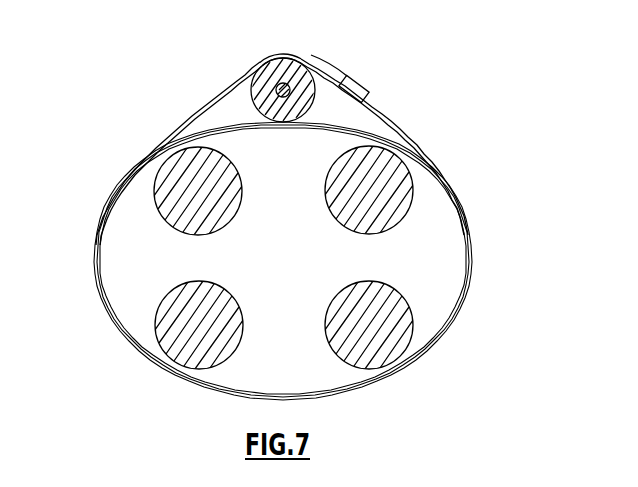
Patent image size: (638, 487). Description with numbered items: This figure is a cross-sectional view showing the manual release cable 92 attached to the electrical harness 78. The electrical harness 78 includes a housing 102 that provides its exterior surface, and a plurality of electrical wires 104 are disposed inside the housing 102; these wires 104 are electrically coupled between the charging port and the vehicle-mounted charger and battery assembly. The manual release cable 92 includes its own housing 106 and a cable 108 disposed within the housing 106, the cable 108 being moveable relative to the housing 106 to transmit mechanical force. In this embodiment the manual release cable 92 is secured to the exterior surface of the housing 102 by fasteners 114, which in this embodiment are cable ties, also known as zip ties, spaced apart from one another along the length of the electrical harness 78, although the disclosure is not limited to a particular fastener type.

The electrical harness 78 is at (388, 138).
The manual release cable 92 is at (245, 94).
The housing 102 is at (353, 129).
The electrical wires 104 is at (180, 177).
The housing 106 is at (274, 68).
The cable 108 is at (288, 85).
The fasteners 114 is at (428, 153).